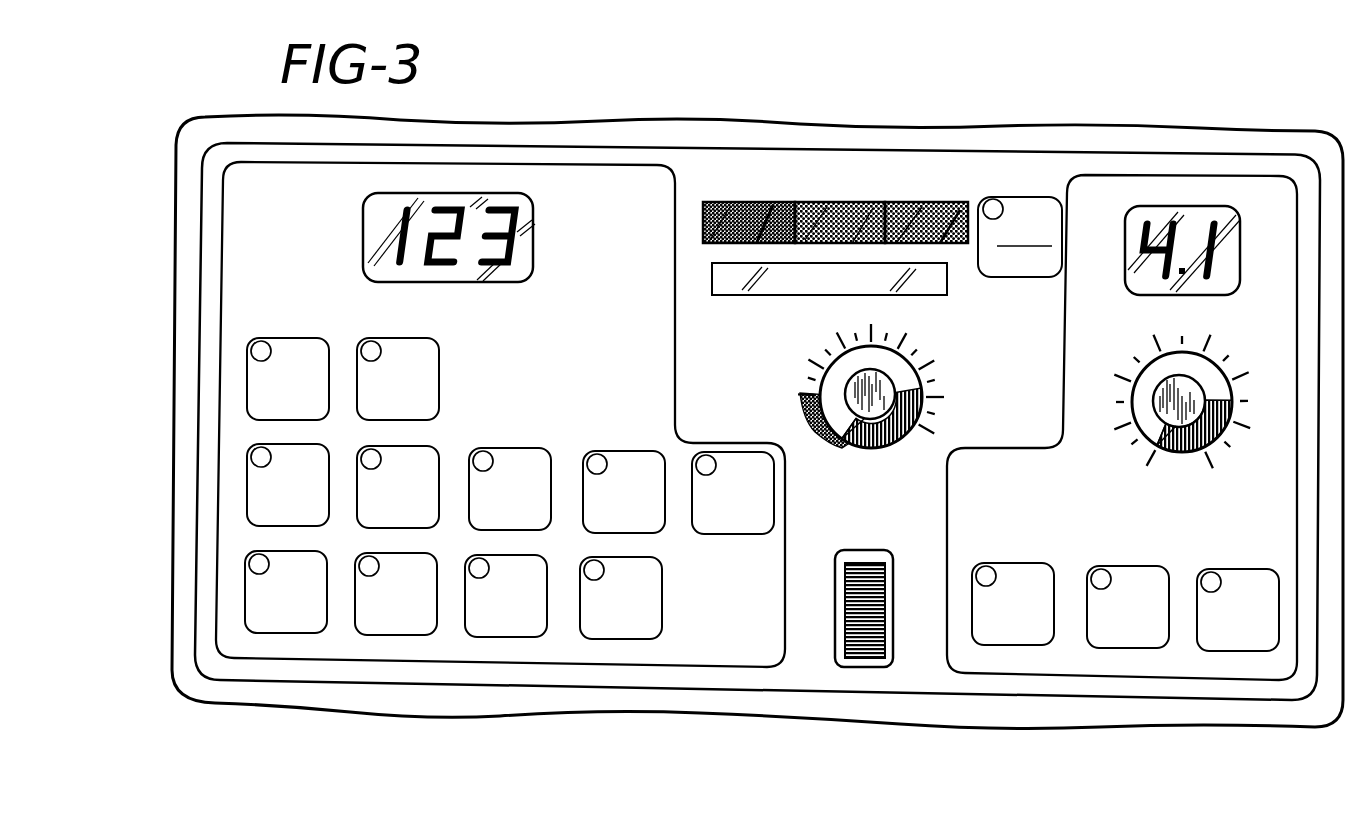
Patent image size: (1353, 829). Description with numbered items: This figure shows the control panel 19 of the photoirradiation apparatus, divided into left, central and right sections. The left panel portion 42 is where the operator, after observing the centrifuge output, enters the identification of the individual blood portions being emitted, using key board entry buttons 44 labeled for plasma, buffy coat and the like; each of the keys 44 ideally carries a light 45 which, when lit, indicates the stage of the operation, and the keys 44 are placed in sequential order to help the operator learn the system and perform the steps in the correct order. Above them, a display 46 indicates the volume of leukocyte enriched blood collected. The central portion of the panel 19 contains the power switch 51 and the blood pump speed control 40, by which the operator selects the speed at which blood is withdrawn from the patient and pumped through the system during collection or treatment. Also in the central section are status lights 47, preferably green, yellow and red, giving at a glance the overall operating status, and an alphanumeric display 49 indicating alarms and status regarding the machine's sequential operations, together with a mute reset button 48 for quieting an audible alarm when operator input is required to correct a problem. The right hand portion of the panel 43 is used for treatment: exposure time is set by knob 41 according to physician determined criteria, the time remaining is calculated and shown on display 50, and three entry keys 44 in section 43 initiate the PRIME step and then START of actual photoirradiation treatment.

The control panel 19 is at (778, 150).
The blood pump speed control 40 is at (885, 390).
The knob 41 is at (1197, 395).
The panel portion 42 is at (598, 356).
The right hand portion of the panel 43 is at (1024, 498).
The keys 44 is at (620, 450).
The light 45 is at (373, 340).
The display 46 is at (525, 240).
The status lights 47 is at (903, 207).
The mute reset button 48 is at (1007, 200).
The alphanumeric display 49 is at (736, 296).
The display 50 is at (1235, 245).
The power switch 51 is at (883, 583).